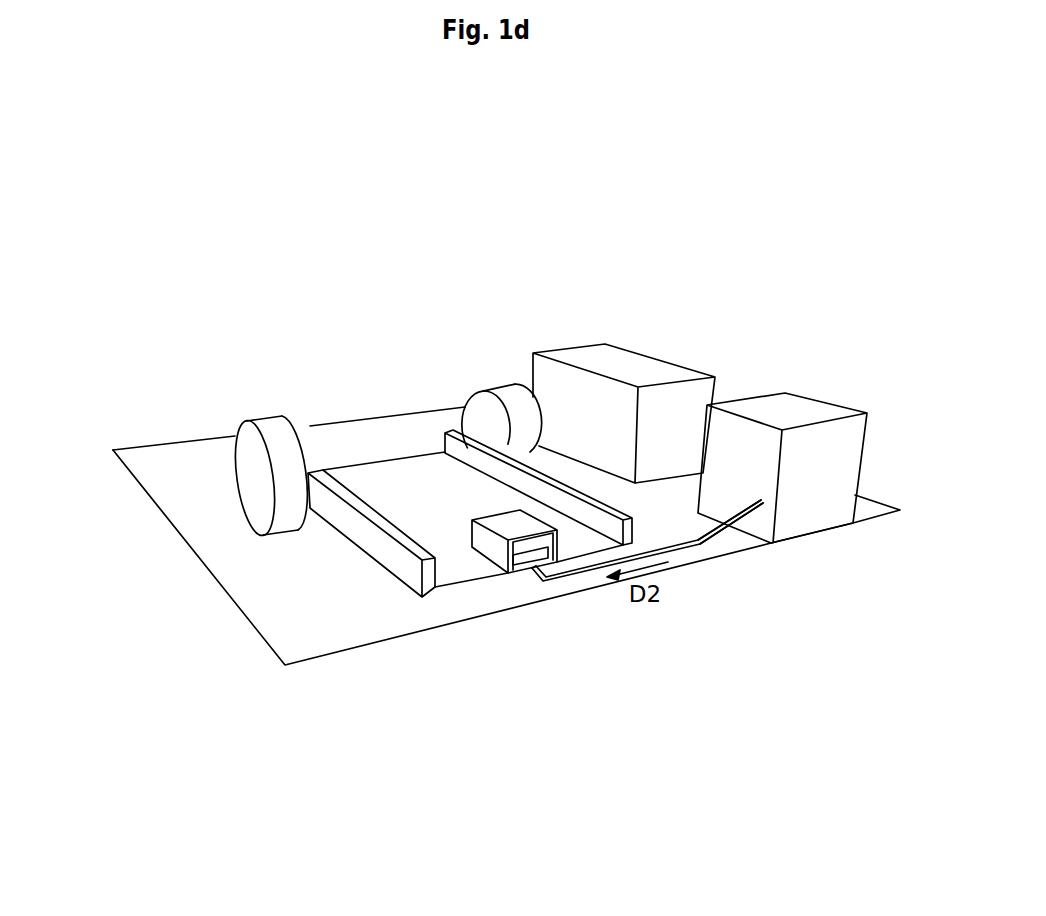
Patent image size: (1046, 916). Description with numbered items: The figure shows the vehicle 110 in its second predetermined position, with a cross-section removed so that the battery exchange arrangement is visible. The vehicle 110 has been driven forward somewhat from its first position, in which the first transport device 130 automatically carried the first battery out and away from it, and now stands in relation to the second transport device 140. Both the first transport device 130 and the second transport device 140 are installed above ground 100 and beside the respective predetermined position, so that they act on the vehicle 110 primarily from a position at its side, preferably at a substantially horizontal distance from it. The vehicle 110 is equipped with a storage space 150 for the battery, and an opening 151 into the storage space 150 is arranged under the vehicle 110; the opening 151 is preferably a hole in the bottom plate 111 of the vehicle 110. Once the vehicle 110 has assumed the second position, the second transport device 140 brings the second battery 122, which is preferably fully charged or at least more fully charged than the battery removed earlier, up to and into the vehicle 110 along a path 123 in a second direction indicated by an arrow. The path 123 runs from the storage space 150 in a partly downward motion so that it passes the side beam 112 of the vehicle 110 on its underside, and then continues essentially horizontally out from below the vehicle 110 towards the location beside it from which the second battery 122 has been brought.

The ground 100 is at (200, 457).
The vehicle 110 is at (465, 411).
The bottom plate 111 is at (368, 477).
The side beam 112 is at (590, 503).
The first transport device 130 is at (670, 362).
The second transport device 140 is at (823, 402).
The storage space 150 is at (451, 638).
The opening 151 is at (525, 567).
The second battery 122 is at (528, 575).
The path 123 is at (683, 548).